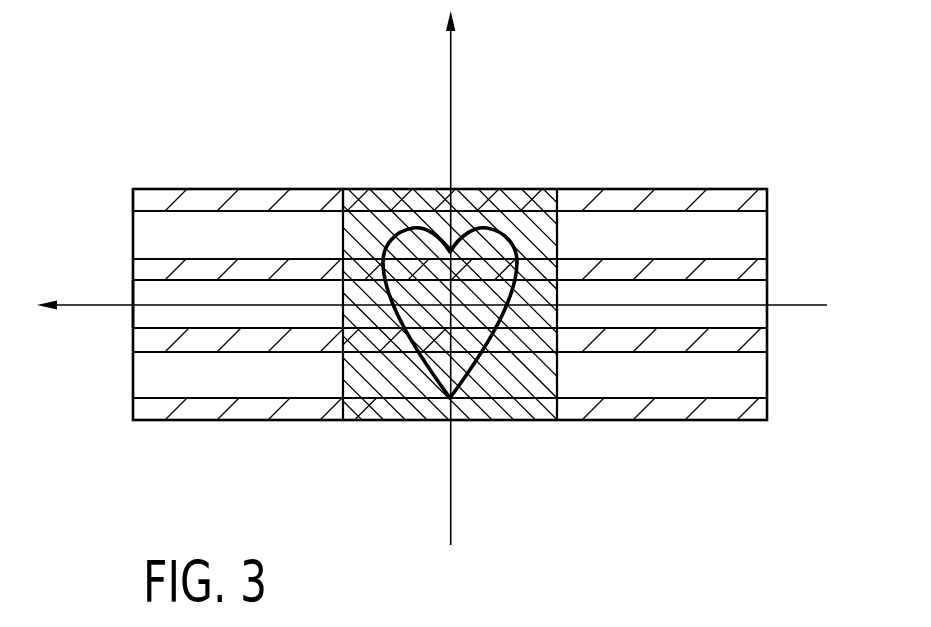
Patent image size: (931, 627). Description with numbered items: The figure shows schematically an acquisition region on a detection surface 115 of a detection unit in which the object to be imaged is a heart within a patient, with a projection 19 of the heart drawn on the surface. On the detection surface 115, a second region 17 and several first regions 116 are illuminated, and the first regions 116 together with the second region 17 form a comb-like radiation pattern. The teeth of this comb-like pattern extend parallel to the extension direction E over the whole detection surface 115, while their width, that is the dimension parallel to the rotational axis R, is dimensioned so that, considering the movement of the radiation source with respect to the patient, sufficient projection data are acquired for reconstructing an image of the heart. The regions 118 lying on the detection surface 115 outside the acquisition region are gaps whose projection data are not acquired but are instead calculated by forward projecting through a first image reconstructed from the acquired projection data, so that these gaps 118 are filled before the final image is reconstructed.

The detection surface 115 is at (201, 421).
The first regions 116 is at (186, 188).
The second region 17 is at (524, 214).
The projection of the heart 19 is at (438, 399).
The regions outside the acquisition region 118 is at (130, 314).
The rotational axis R is at (452, 88).
The extension direction E is at (71, 302).